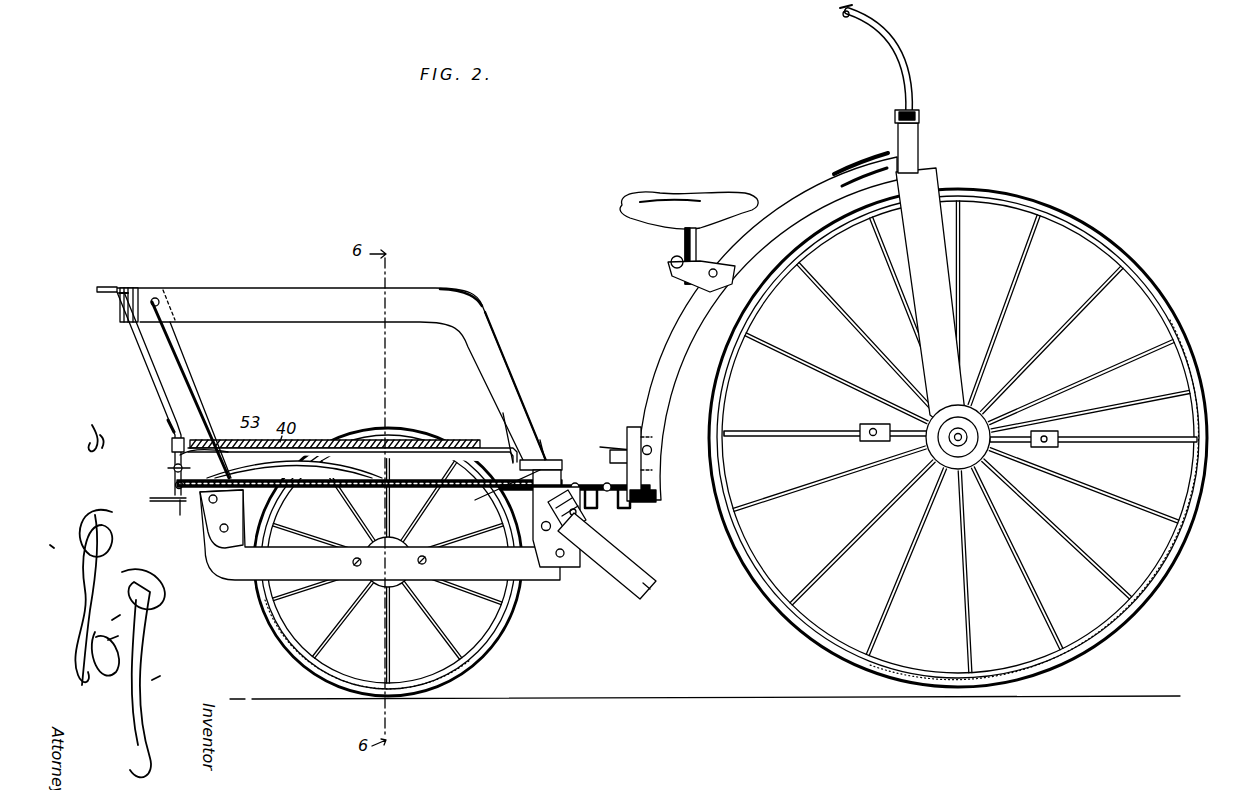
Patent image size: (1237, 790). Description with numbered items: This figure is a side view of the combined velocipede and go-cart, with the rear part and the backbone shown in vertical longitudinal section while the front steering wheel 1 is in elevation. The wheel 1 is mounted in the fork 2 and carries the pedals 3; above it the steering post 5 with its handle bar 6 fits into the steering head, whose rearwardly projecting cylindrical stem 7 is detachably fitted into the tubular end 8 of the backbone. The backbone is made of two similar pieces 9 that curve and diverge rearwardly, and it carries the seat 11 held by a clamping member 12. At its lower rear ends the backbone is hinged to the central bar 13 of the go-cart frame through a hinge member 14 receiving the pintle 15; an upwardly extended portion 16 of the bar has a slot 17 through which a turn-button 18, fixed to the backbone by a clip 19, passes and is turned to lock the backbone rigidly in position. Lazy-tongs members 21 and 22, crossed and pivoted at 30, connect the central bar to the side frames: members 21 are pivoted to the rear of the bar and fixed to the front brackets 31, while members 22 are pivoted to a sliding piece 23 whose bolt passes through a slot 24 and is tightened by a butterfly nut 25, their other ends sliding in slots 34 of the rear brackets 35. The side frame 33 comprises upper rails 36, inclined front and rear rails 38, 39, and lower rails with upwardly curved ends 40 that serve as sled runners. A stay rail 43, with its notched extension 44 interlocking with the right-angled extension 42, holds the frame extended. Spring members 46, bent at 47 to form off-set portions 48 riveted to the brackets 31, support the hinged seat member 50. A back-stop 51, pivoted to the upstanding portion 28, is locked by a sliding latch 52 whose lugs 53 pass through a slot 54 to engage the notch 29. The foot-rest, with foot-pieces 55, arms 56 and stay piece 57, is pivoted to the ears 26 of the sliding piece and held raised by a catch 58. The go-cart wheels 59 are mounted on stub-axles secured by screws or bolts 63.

The front steering wheel 1 is at (795, 521).
The fork 2 is at (908, 291).
The pedals 3 is at (860, 444).
The steering post 5 is at (905, 95).
The handle bar 6 is at (842, 18).
The cylindrical stem 7 is at (918, 165).
The tubular end of the backbone 8 is at (855, 160).
The backbone pieces 9 is at (672, 355).
The seat 11 is at (700, 188).
The clamping member 12 is at (676, 270).
The central bar 13 is at (375, 562).
The hinge member 14 is at (600, 450).
The pintle 15 is at (652, 488).
The upwardly extended portion 16 is at (612, 445).
The slot 17 is at (662, 458).
The turn-button 18 is at (608, 462).
The clip 19 is at (660, 432).
The lazy-tongs members 21 is at (270, 476).
The lazy-tongs members 22 is at (478, 440).
The sliding piece 23 is at (550, 460).
The slot 24 is at (552, 470).
The butterfly nut 25 is at (498, 503).
The ears 26 is at (536, 545).
The upstanding portion 28 is at (170, 468).
The notch 29 is at (220, 446).
The pivotal connection 30 is at (392, 442).
The brackets 31 is at (530, 548).
The side frame 33 is at (477, 288).
The slots 34 is at (380, 535).
The brackets 35 is at (207, 528).
The upper rails 36 is at (322, 375).
The front rails 38 is at (480, 368).
The rear rails 39 is at (158, 375).
The curved ends 40 is at (615, 580).
The right-angled extension 42 is at (135, 285).
The stay rail 43 is at (120, 318).
The notched right-angled extension 44 is at (160, 296).
The spring members 46 is at (294, 466).
The bend 47 is at (510, 435).
The off-set portions 48 is at (537, 430).
The seat member 50 is at (312, 440).
The back-stop 51 is at (160, 412).
The sliding latch 52 is at (165, 497).
The lugs 53 is at (180, 505).
The slot 54 is at (170, 445).
The foot-pieces 55 is at (660, 586).
The arms 56 is at (588, 516).
The stay piece 57 is at (590, 528).
The catch 58 is at (648, 540).
The wheels 59 is at (262, 605).
The screws or bolts 63 is at (362, 562).